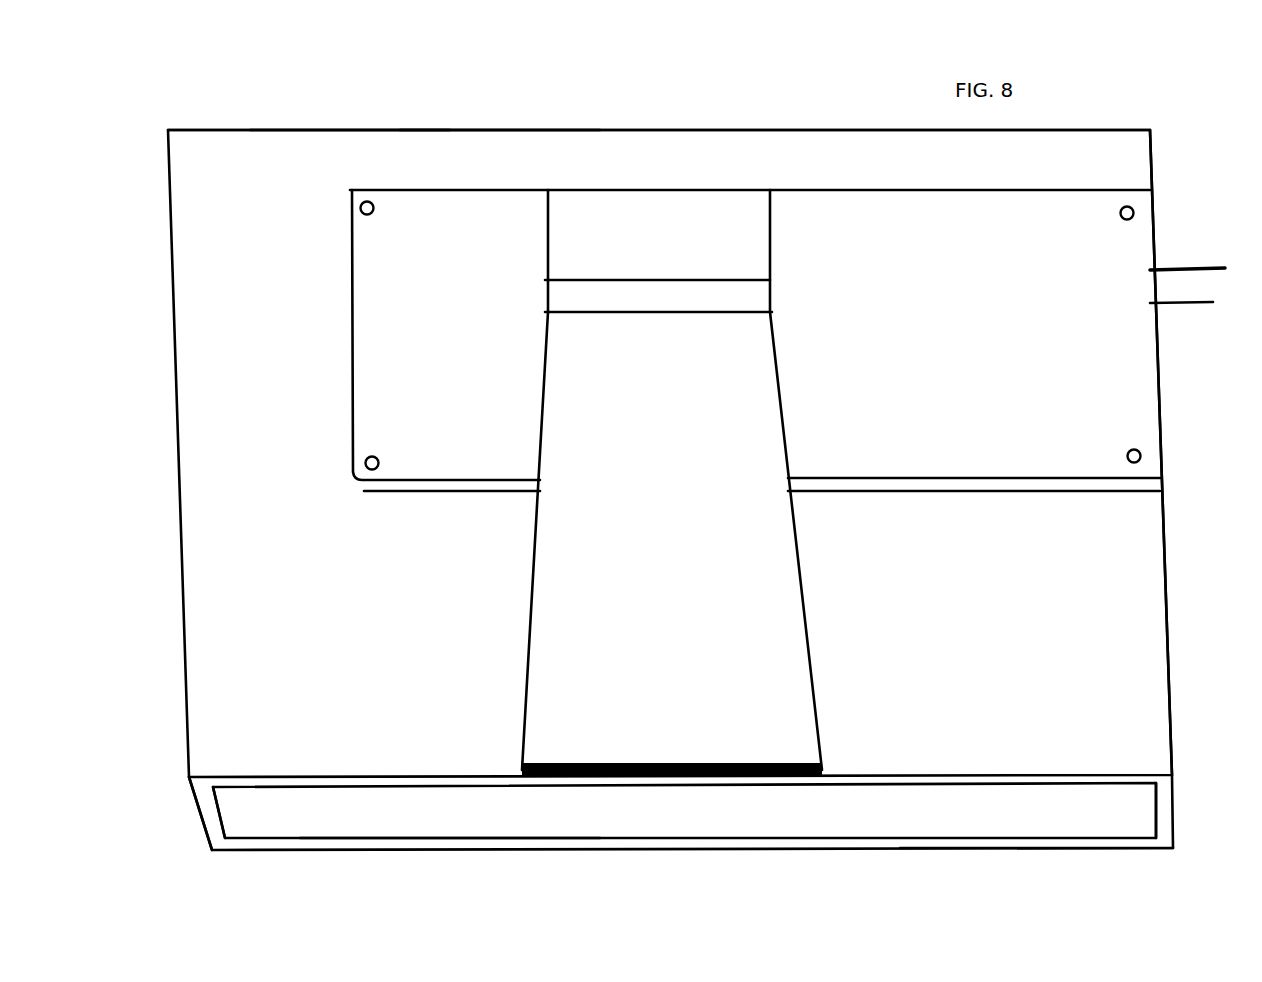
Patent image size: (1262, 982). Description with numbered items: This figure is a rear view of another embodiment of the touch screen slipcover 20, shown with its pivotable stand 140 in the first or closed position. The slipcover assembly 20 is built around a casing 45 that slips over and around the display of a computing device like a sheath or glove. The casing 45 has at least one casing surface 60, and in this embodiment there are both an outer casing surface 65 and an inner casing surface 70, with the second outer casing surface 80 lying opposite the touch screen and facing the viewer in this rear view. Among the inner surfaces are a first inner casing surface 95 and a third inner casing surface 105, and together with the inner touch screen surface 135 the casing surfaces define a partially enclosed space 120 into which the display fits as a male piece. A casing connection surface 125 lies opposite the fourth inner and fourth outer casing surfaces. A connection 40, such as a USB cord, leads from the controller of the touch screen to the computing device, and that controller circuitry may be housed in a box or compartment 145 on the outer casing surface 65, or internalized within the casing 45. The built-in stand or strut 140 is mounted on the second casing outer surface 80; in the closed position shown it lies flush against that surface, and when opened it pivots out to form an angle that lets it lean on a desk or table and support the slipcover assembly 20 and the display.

The touch screen slipcover 20 is at (1162, 170).
The connection 40 is at (1168, 282).
The casing 45 is at (1138, 550).
The casing surface 60 is at (340, 148).
The outer casing surface 65 is at (490, 142).
The inner casing surface 70 is at (700, 828).
The second outer casing surface 80 is at (200, 142).
The first inner casing surface 95 is at (1028, 838).
The third inner casing surface 105 is at (222, 815).
The partially enclosed space 120 is at (275, 822).
The casing connection surface 125 is at (1138, 840).
The inner touch screen surface 135 is at (455, 822).
The stand 140 is at (793, 753).
The box or compartment 145 is at (1137, 407).